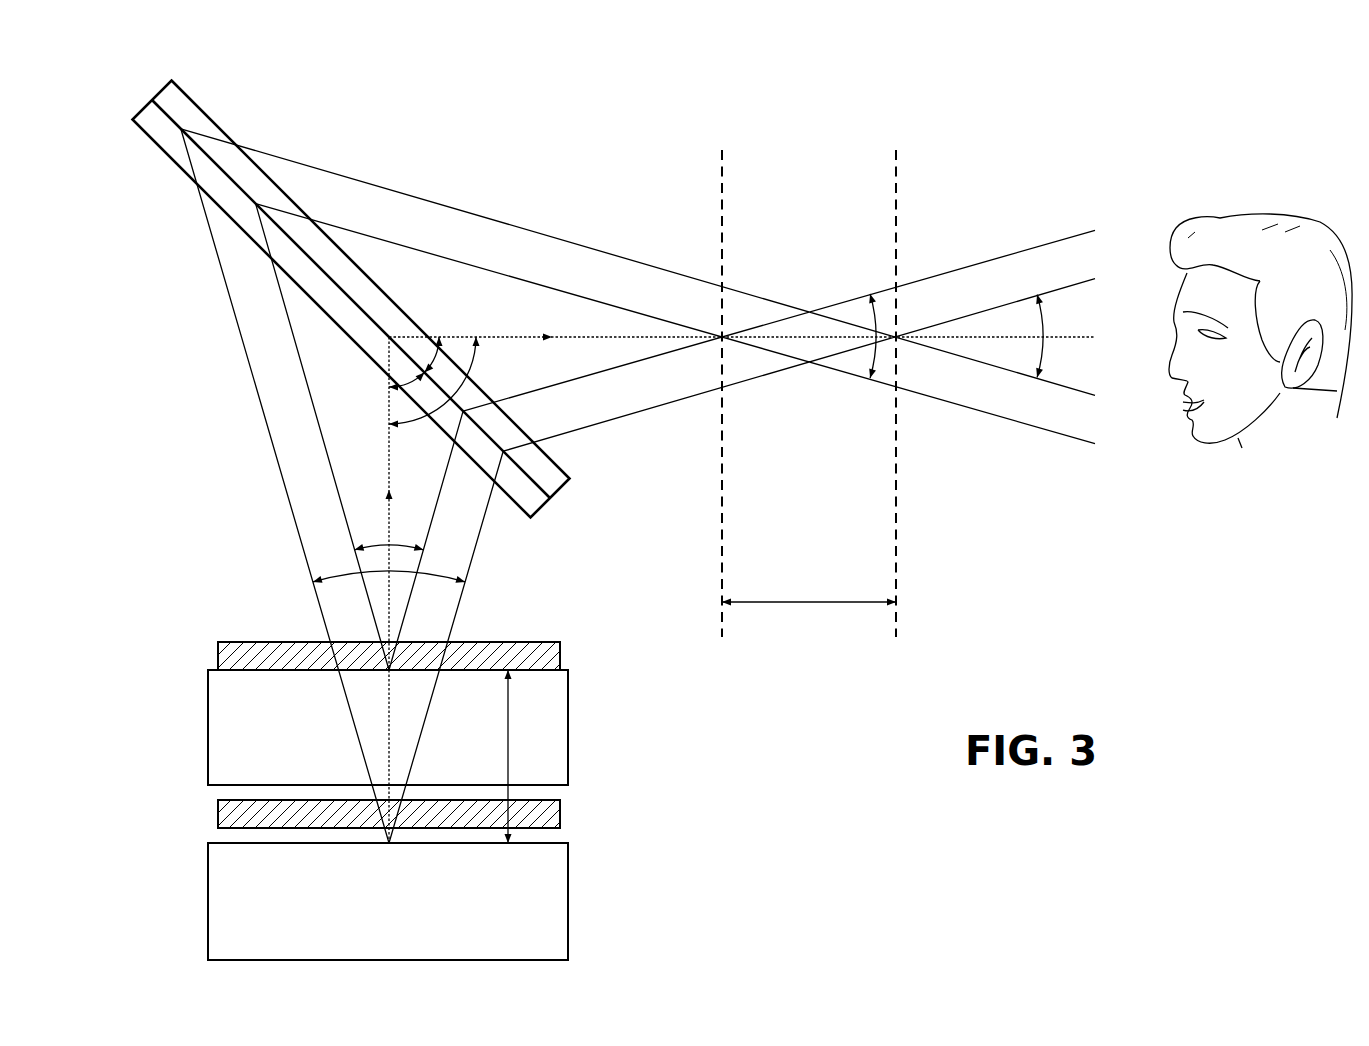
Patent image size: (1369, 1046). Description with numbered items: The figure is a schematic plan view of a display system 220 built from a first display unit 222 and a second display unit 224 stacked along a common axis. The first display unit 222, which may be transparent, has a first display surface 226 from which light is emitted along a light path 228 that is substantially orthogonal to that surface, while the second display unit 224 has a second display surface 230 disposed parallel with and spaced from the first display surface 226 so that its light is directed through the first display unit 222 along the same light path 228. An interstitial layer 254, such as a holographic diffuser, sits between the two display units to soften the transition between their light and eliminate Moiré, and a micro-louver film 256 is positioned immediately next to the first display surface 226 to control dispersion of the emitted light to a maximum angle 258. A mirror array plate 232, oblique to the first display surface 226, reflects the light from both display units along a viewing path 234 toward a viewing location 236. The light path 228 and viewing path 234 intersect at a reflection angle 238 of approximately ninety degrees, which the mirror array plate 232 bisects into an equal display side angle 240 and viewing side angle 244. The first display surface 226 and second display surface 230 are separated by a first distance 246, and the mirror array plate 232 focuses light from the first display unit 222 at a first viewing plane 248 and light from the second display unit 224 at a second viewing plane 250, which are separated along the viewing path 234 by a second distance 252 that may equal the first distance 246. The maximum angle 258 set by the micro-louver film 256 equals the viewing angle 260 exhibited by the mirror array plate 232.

The display system 220 is at (434, 136).
The first display unit 222 is at (569, 719).
The second display unit 224 is at (569, 897).
The first display surface 226 is at (226, 668).
The light path 228 is at (386, 396).
The second display surface 230 is at (238, 843).
The mirror array plate 232 is at (190, 94).
The viewing path 234 is at (598, 338).
The viewing location 236 is at (1218, 218).
The reflection angle 238 is at (478, 368).
The display side angle 240 is at (410, 390).
The viewing side angle 244 is at (445, 355).
The first distance 246 is at (508, 713).
The first viewing plane 248 is at (722, 202).
The second viewing plane 250 is at (896, 202).
The second distance 252 is at (760, 603).
The interstitial layer 254 is at (561, 815).
The micro-louver film 256 is at (509, 642).
The maximum angle 258 is at (318, 582).
The viewing angle 260 is at (880, 379).